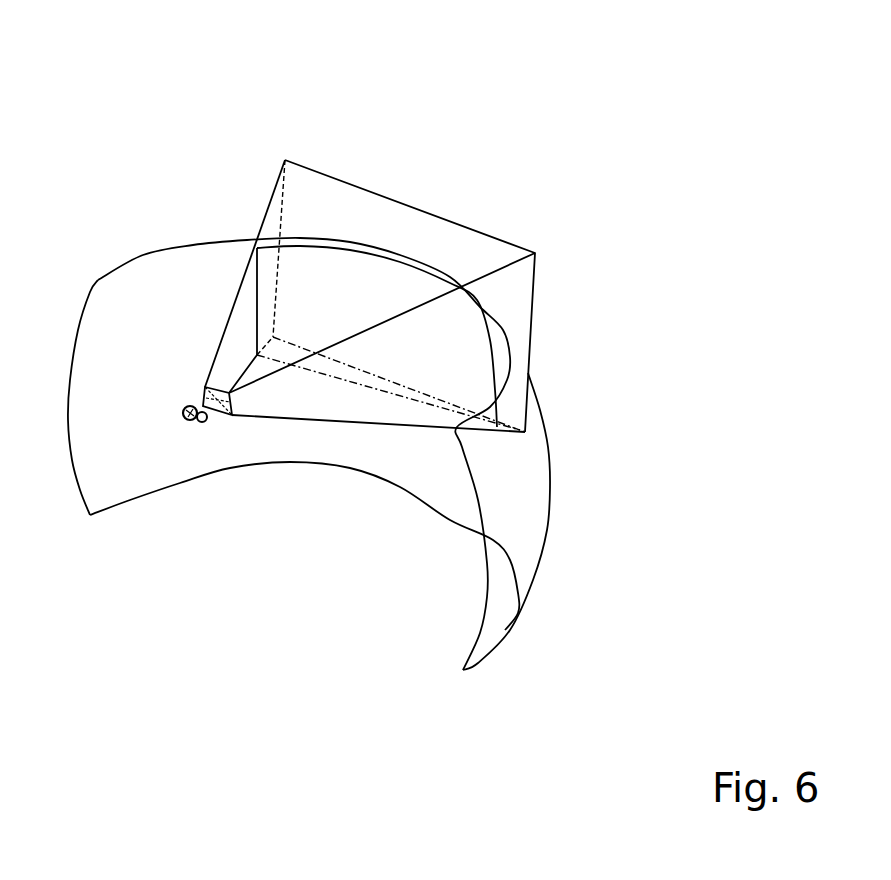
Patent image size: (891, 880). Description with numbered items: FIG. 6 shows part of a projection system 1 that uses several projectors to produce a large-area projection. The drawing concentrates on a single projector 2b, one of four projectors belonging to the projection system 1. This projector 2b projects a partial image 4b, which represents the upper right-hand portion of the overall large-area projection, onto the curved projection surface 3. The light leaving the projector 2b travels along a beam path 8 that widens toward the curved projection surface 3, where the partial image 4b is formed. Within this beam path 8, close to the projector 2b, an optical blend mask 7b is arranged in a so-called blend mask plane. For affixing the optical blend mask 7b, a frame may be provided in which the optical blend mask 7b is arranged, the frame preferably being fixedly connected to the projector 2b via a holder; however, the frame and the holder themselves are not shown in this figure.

The projection system 1 is at (148, 140).
The curved projection surface 3 is at (160, 303).
The partial image 4b is at (460, 343).
The beam path 8 is at (237, 357).
The optical blend mask 7b is at (222, 415).
The projector 2b is at (190, 422).